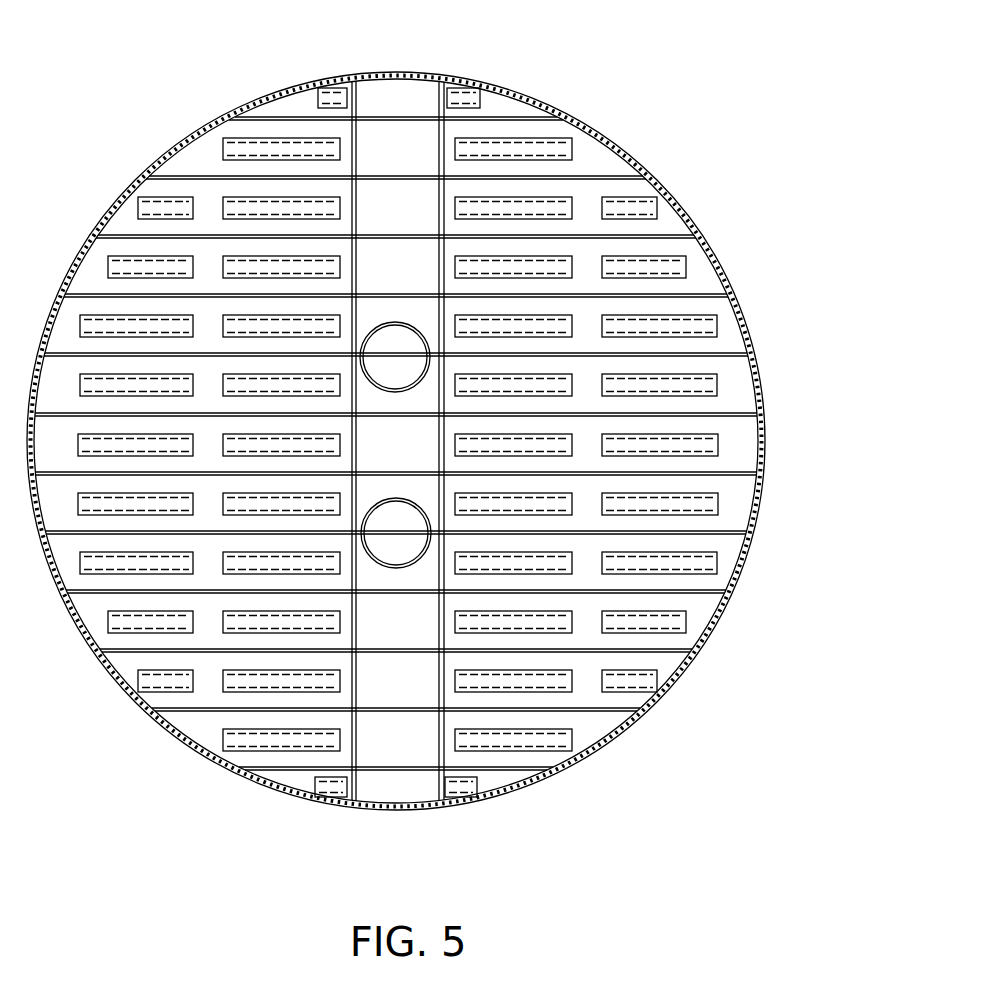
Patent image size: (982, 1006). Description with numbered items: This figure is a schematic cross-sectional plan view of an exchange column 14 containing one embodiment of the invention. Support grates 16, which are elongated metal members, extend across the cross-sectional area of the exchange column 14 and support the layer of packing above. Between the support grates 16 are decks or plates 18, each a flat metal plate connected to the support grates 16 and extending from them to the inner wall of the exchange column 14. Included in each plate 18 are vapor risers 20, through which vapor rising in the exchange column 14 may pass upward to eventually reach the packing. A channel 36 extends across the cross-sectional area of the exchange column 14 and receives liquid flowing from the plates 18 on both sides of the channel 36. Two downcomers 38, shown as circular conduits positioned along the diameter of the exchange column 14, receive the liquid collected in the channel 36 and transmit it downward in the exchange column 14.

The exchange column 14 is at (618, 146).
The support grates 16 is at (733, 351).
The plate 18 is at (737, 497).
The vapor riser 20 is at (722, 440).
The channel 36 is at (403, 92).
The downcomers 38 is at (397, 568).